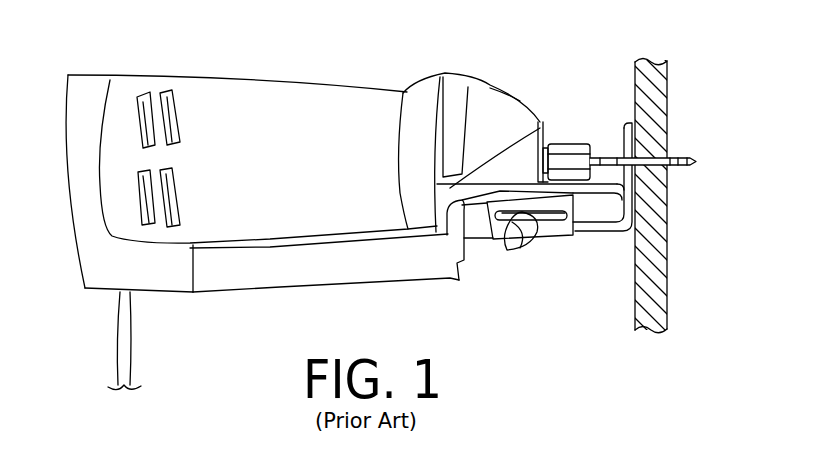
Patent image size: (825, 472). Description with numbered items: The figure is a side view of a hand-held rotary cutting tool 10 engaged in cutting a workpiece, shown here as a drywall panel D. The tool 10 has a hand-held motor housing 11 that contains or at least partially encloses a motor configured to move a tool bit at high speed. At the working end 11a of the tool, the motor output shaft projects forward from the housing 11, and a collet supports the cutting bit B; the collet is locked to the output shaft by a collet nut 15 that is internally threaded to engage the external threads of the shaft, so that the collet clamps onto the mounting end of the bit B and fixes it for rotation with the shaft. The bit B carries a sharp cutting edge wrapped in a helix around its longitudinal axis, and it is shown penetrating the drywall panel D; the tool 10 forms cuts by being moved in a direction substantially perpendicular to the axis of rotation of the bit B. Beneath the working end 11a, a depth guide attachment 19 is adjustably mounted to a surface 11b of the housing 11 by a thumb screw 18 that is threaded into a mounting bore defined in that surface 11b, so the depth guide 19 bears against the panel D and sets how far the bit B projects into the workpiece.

The rotary cutting tool 10 is at (290, 74).
The motor housing 11 is at (215, 92).
The working end 11a is at (545, 123).
The surface of the housing 11b is at (472, 222).
The collet nut 15 is at (571, 143).
The thumb screw 18 is at (518, 247).
The depth guide attachment 19 is at (580, 223).
The drywall panel D is at (661, 80).
The cutting bit B is at (681, 168).